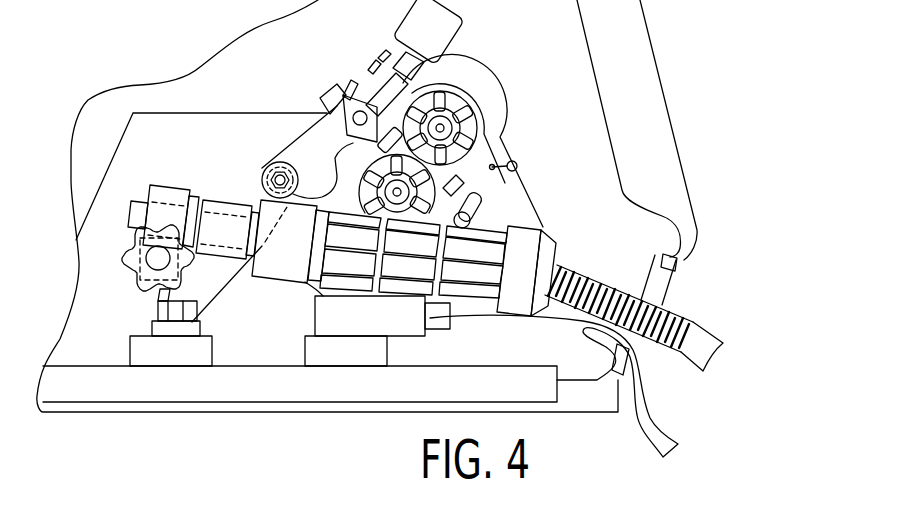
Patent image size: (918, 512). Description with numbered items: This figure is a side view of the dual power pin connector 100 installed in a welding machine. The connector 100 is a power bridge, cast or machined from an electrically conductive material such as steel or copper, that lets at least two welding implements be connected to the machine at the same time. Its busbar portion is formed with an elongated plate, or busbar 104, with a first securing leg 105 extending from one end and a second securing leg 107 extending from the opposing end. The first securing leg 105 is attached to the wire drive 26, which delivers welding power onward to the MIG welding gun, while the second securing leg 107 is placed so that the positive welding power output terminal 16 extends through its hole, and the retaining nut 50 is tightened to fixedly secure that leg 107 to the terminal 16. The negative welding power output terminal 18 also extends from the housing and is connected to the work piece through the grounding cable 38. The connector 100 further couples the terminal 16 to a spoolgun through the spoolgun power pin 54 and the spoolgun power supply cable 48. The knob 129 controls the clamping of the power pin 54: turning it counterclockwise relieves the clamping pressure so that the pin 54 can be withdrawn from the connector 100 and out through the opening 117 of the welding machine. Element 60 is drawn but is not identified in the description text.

The positive welding power output terminal 16 is at (170, 347).
The negative welding power output terminal 18 is at (348, 347).
The wire drive 26 is at (502, 96).
The grounding cable 38 is at (656, 433).
The spoolgun power supply cable 48 is at (706, 338).
The nut 50 is at (157, 313).
The spoolgun power pin 54 is at (200, 216).
The rail assembly 60 is at (492, 232).
The dual power pin connector 100 is at (211, 166).
The busbar 104 is at (230, 274).
The first securing leg 105 is at (250, 182).
The second securing leg 107 is at (187, 328).
The opening 117 is at (684, 293).
The knob 129 is at (110, 262).